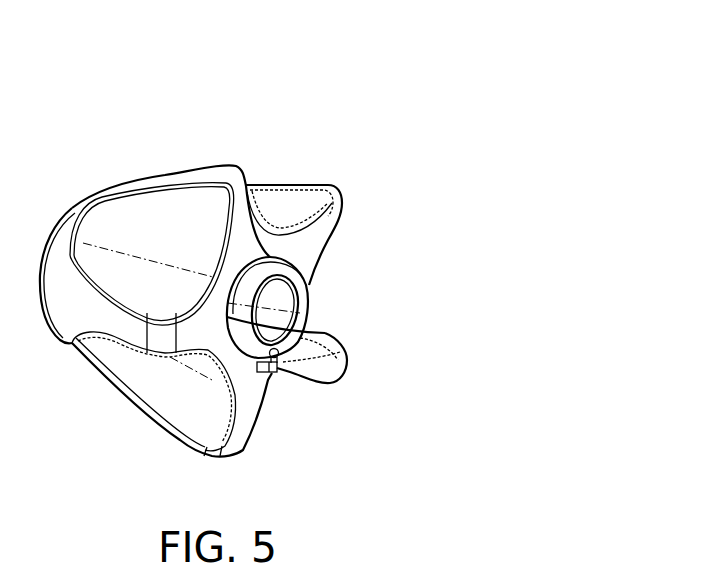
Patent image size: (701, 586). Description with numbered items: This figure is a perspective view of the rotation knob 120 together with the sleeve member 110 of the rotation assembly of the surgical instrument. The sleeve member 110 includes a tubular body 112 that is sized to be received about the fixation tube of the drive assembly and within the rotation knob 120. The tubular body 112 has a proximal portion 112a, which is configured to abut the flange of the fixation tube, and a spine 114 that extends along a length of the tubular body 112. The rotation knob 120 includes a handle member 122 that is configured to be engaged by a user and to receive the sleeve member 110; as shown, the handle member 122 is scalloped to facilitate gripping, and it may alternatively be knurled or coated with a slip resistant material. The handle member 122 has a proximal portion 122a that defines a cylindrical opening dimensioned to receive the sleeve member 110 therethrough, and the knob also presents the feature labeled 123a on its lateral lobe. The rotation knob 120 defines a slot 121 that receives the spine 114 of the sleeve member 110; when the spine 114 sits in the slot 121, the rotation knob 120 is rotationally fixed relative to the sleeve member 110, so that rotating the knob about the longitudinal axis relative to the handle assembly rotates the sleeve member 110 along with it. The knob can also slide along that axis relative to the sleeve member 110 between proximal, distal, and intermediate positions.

The sleeve member 110 is at (240, 262).
The tubular body 112 is at (268, 256).
The proximal portion 112a is at (310, 282).
The spine 114 is at (274, 373).
The rotation knob 120 is at (202, 124).
The slot 121 is at (258, 374).
The handle member 122 is at (292, 218).
The proximal portion 122a is at (210, 332).
The lateral arm 123a is at (322, 335).